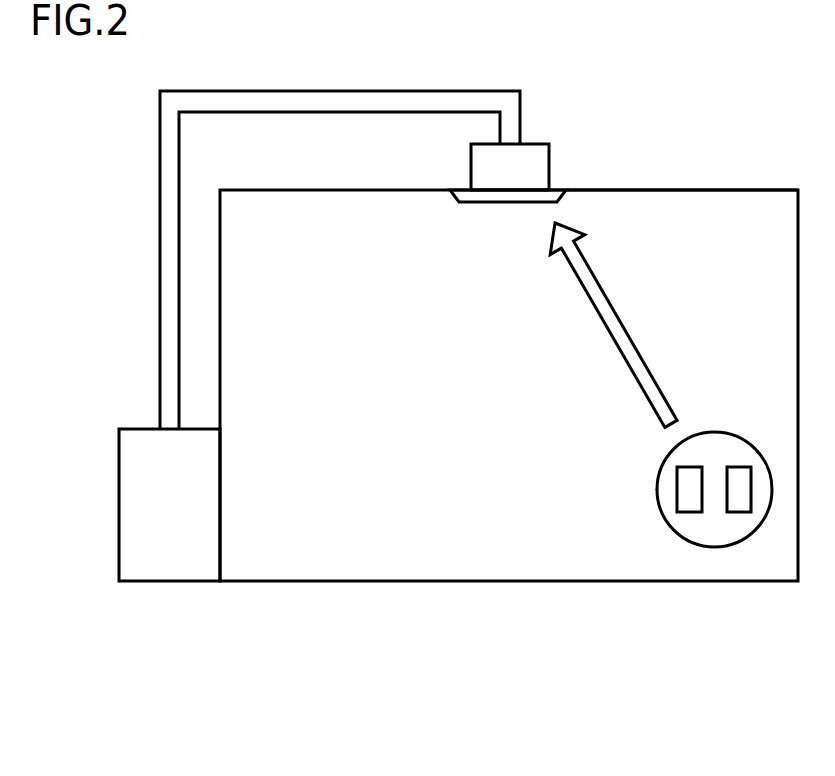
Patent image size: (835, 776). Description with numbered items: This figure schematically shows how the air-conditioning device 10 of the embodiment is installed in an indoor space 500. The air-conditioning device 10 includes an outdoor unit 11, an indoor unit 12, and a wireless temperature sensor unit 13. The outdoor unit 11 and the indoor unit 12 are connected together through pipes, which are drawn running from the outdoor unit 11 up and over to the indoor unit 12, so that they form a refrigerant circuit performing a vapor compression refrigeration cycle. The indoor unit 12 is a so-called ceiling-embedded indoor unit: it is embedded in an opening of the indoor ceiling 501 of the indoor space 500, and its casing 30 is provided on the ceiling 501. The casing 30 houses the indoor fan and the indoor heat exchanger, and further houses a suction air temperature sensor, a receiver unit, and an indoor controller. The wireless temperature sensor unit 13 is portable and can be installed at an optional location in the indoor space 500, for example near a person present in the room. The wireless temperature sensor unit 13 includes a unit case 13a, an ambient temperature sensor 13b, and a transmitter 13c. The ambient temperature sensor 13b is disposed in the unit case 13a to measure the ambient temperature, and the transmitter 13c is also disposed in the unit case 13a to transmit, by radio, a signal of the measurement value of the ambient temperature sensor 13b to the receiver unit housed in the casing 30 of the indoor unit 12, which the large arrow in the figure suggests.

The indoor space 500 is at (308, 252).
The ceiling 501 is at (643, 190).
The casing 30 is at (549, 163).
The indoor unit 12 is at (505, 209).
The air-conditioning device 10 is at (150, 350).
The outdoor unit 11 is at (110, 515).
The wireless temperature sensor unit 13 is at (717, 426).
The unit case 13a is at (657, 488).
The ambient temperature sensor 13b is at (688, 512).
The transmitter 13c is at (740, 512).